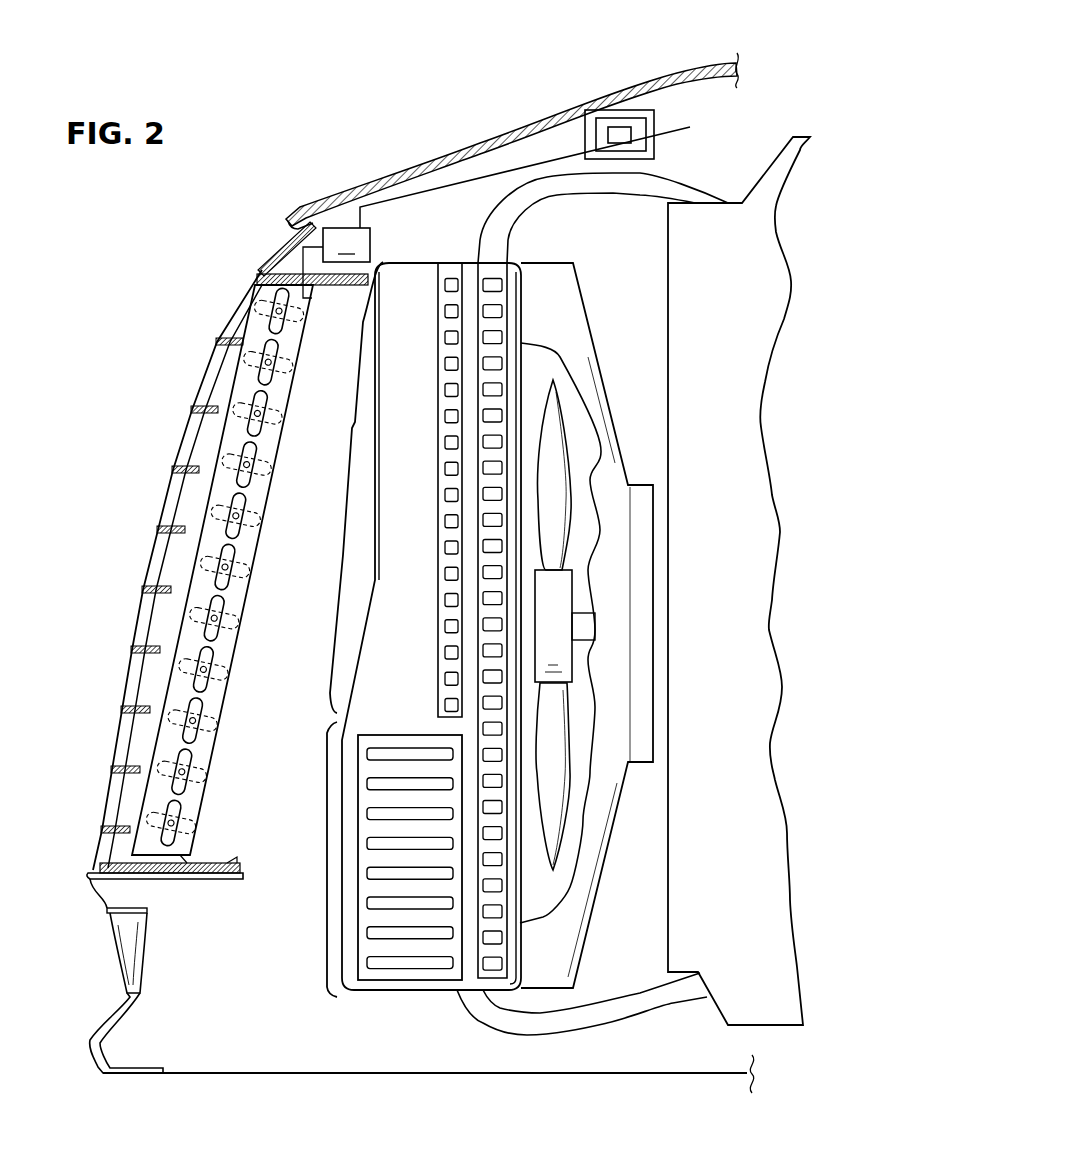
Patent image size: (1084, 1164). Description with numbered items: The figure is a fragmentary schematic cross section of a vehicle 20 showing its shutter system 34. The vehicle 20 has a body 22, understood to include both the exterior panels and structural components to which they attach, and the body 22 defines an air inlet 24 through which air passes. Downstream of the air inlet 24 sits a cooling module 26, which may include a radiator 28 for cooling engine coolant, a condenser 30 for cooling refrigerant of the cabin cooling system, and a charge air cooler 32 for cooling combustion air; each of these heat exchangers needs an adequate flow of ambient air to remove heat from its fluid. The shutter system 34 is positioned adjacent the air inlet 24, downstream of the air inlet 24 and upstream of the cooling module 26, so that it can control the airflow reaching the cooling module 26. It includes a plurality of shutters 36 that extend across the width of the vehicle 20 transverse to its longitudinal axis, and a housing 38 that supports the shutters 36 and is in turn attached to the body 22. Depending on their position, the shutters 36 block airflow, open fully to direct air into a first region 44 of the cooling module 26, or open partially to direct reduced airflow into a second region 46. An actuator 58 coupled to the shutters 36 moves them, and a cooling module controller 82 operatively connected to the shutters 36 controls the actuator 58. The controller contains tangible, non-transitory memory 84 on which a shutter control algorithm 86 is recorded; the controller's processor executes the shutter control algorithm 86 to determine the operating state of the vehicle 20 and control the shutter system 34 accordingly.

The vehicle 20 is at (667, 48).
The body 22 is at (450, 152).
The air inlet 24 is at (133, 608).
The cooling module 26 is at (462, 266).
The radiator 28 is at (487, 317).
The condenser 30 is at (440, 377).
The charge air cooler 32 is at (377, 857).
The shutter system 34 is at (205, 502).
The shutters 36 is at (278, 338).
The housing 38 is at (247, 603).
The first region 44 is at (327, 823).
The second region 46 is at (353, 428).
The actuator 58 is at (336, 263).
The cooling module controller 82 is at (656, 133).
The memory 84 is at (625, 111).
The shutter control algorithm 86 is at (634, 158).